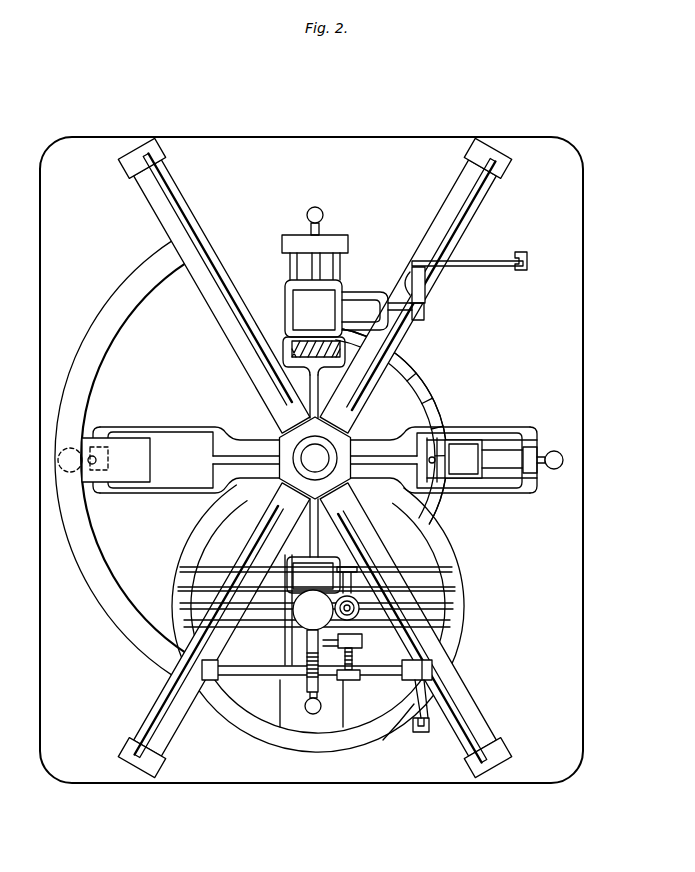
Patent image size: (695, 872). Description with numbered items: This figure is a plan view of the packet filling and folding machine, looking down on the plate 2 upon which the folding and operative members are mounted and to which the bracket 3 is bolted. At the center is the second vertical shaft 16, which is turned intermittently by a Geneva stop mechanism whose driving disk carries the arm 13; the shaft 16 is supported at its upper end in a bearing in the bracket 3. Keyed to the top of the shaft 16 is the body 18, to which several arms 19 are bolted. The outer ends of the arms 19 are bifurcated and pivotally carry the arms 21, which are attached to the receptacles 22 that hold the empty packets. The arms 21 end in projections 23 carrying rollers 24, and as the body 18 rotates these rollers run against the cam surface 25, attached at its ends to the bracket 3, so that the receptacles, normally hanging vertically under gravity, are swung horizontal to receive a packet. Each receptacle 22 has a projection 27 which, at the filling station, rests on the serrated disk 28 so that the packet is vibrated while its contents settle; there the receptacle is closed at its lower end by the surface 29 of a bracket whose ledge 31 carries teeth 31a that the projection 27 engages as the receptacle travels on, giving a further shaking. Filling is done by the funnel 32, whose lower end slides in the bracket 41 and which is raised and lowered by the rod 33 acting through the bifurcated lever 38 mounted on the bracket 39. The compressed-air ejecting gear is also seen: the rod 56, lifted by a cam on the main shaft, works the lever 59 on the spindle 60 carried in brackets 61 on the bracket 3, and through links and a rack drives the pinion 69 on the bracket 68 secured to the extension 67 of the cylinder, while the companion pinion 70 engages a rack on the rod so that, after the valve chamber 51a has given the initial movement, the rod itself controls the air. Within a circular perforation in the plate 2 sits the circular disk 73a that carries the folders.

The plate 2 is at (311, 460).
The bracket 3 is at (470, 220).
The arm 13 is at (212, 262).
The second vertical shaft 16 is at (315, 466).
The body 18 is at (280, 440).
The arms 19 is at (184, 437).
The arms 21 is at (505, 450).
The receptacles 22 is at (282, 460).
The projections 23 is at (322, 228).
The rollers 24 is at (318, 210).
The cam surface 25 is at (100, 592).
The projection 27 is at (432, 478).
The serrated disk 28 is at (314, 356).
The surface 29 is at (445, 400).
The projecting ledge 31 is at (407, 368).
The teeth 31a is at (420, 385).
The funnel 32 is at (313, 308).
The rod 33 is at (514, 258).
The lever 38 is at (418, 300).
The bracket 39 is at (410, 275).
The bracket 41 is at (307, 640).
The valve chamber or cylinder 51a is at (352, 598).
The rod 56 is at (421, 732).
The lever 59 is at (398, 729).
The spindle 60 is at (235, 664).
The brackets 61 is at (214, 681).
The extension 67 is at (362, 640).
The bracket 68 is at (352, 660).
The pinion 69 is at (352, 680).
The pinion 70 is at (270, 660).
The circular disk 73a is at (450, 636).